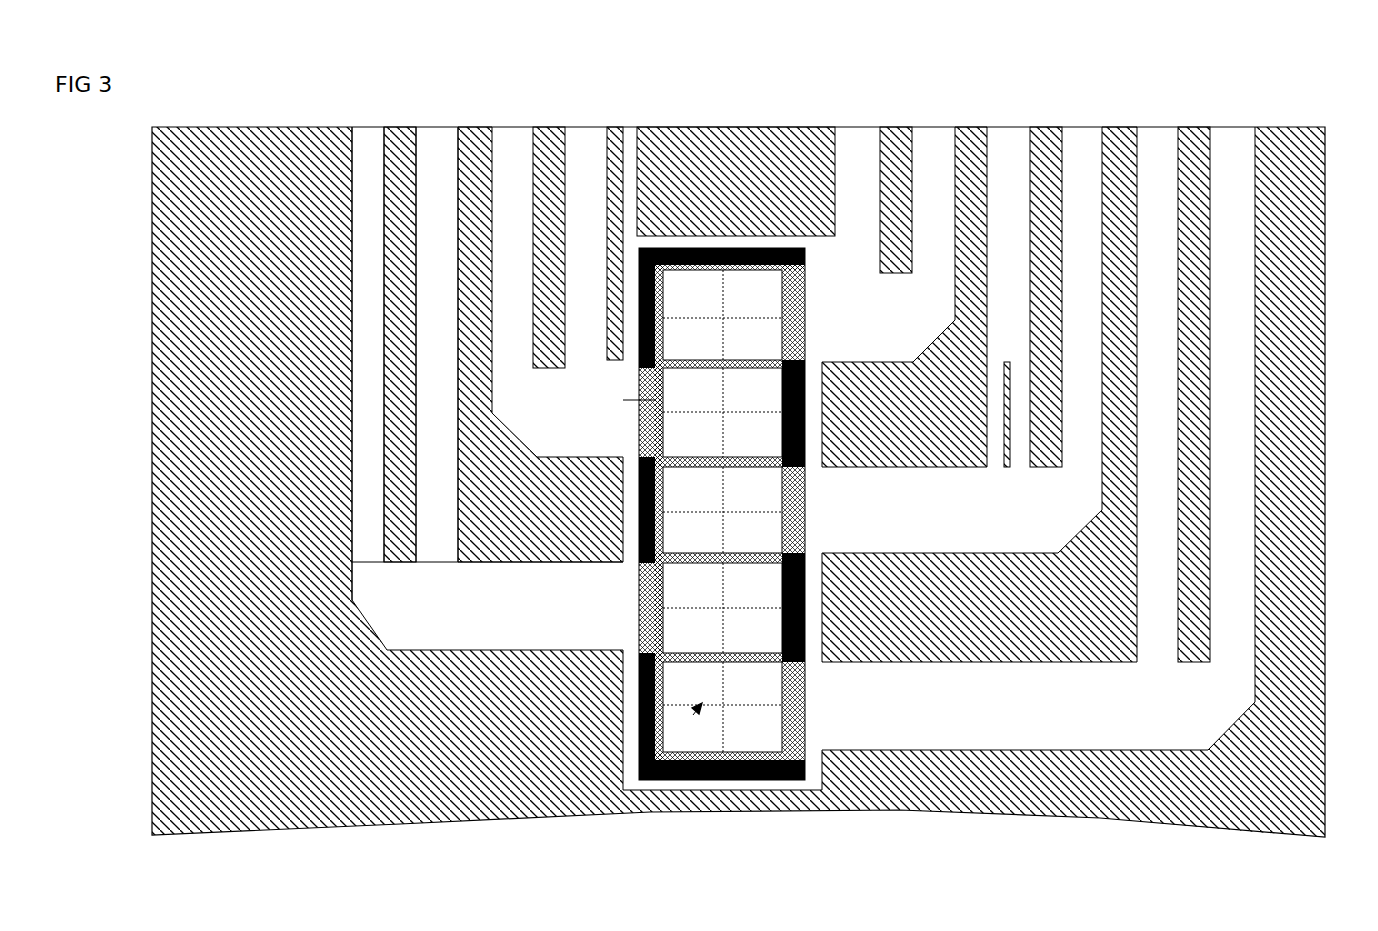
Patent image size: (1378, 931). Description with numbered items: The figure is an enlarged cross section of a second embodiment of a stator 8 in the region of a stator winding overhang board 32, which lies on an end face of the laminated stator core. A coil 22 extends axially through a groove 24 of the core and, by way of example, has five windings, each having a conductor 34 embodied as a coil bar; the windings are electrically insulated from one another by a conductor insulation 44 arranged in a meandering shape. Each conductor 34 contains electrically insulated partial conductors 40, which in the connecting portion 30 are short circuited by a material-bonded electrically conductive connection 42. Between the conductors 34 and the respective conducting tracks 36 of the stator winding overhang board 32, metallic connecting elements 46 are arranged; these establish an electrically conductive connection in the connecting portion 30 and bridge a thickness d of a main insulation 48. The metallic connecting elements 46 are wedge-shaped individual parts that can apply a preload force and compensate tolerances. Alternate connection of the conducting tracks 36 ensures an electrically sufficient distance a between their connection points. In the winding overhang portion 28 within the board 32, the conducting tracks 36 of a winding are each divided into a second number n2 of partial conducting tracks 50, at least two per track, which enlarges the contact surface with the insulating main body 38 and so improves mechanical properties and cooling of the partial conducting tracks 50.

The stator 8 is at (1130, 97).
The coil 22 is at (726, 467).
The groove 24 is at (628, 245).
The winding overhang portion 28 is at (478, 184).
The connecting portion 30 is at (698, 534).
The stator winding overhang board 32 is at (1303, 265).
The conductor 34 is at (706, 780).
The conducting track 36 is at (436, 594).
The insulating main body 38 is at (258, 778).
The partial conductor 40 is at (762, 688).
The electrically conductive connection 42 is at (735, 705).
The conductor insulation 44 is at (800, 270).
The metallic connecting element 46 is at (800, 320).
The main insulation 48 is at (648, 782).
The partial conducting track 50 is at (358, 140).
The second number n2 is at (542, 184).
The distance a is at (1020, 430).
The thickness d is at (635, 392).